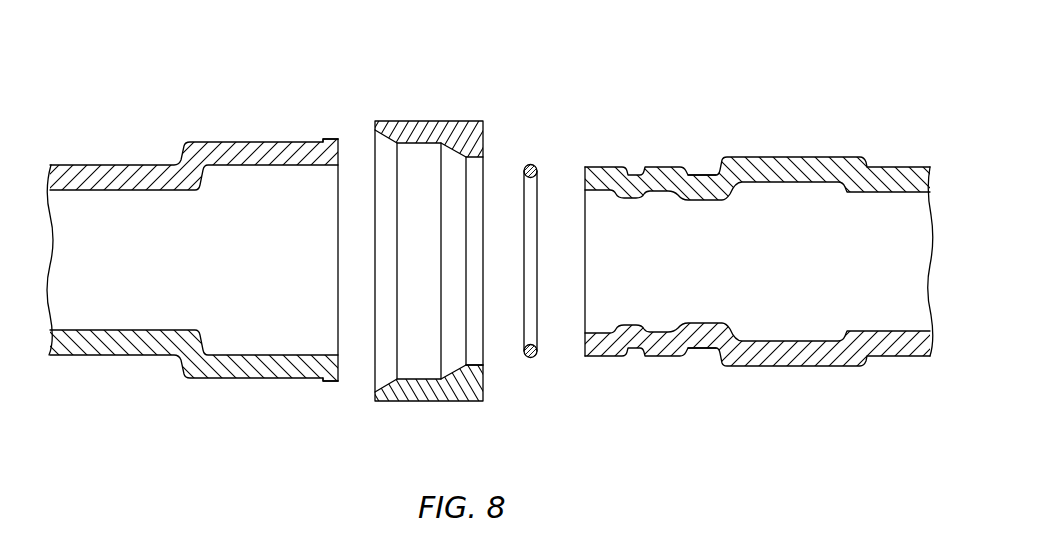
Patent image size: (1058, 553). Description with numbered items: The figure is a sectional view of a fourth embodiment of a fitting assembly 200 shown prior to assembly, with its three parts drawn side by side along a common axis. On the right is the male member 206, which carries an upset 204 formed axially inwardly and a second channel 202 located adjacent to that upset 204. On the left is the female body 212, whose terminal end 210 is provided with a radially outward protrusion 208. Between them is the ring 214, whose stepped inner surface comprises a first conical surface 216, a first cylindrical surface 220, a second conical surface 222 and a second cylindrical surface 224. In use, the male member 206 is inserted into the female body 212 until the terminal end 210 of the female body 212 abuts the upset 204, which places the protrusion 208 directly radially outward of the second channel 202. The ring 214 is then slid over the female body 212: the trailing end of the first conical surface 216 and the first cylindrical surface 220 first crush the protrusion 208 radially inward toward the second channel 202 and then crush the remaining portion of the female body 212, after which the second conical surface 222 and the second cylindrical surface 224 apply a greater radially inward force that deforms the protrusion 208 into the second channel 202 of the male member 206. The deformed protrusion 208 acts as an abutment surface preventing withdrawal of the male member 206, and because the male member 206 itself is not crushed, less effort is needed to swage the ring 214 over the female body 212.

The fitting assembly 200 is at (543, 78).
The second channel 202 is at (703, 168).
The upset 204 is at (787, 157).
The male member 206 is at (612, 154).
The protrusion 208 is at (330, 137).
The terminal end 210 is at (340, 136).
The female body 212 is at (252, 136).
The ring 214 is at (439, 112).
The first conical surface 216 is at (391, 381).
The first cylindrical surface 220 is at (421, 378).
The second conical surface 222 is at (456, 371).
The second cylindrical surface 224 is at (480, 362).